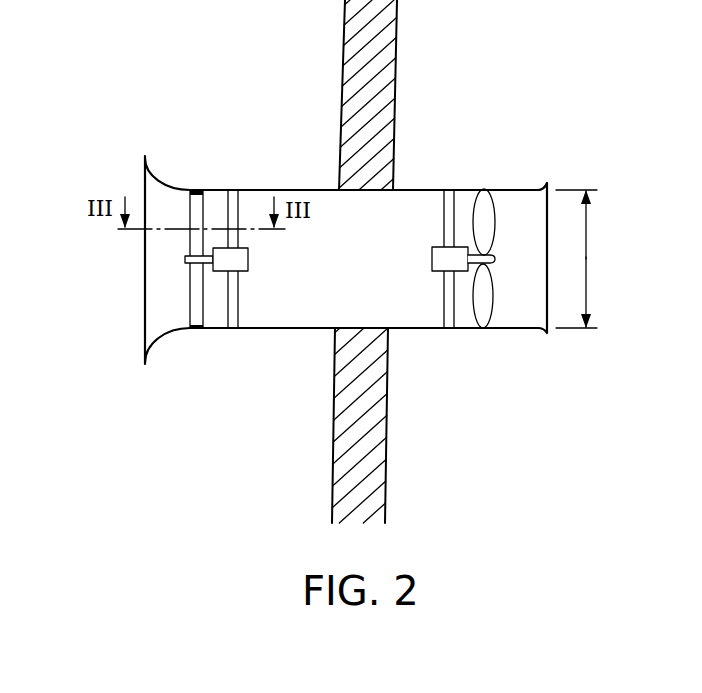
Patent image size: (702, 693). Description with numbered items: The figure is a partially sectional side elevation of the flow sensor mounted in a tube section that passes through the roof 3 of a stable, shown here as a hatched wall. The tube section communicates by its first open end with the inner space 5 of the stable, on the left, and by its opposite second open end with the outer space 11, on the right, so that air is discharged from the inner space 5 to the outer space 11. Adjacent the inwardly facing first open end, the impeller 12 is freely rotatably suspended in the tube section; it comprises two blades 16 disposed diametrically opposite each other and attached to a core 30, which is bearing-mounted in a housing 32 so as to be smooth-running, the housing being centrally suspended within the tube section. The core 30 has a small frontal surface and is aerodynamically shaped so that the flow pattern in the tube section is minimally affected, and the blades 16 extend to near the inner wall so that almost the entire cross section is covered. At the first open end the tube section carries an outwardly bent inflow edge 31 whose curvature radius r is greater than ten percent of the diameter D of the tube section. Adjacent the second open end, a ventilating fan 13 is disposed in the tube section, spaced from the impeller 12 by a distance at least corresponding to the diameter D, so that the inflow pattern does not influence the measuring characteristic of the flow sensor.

The roof 3 is at (380, 78).
The inner space 5 is at (107, 64).
The outer space 11 is at (588, 61).
The impeller 12 is at (172, 293).
The ventilating fan 13 is at (508, 222).
The blade 16 is at (197, 205).
The core 30 is at (185, 261).
The inflow edge 31 is at (132, 380).
The housing 32 is at (235, 258).
The distance section relative to the center of the core r is at (157, 340).
The diameter of the tube section D is at (585, 259).